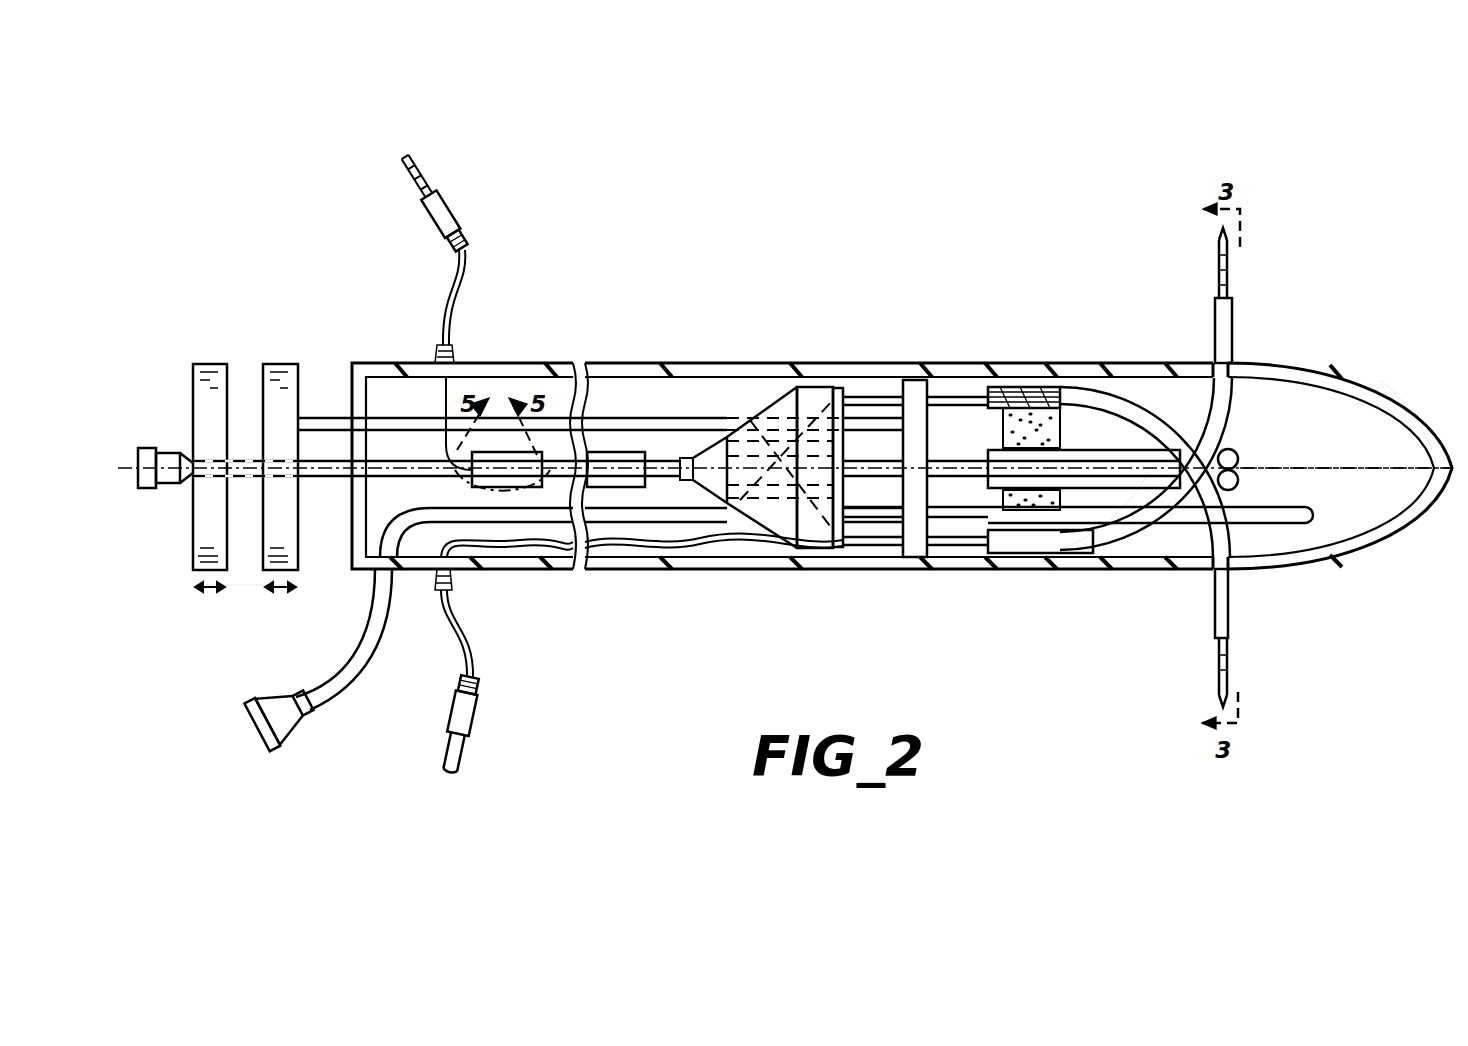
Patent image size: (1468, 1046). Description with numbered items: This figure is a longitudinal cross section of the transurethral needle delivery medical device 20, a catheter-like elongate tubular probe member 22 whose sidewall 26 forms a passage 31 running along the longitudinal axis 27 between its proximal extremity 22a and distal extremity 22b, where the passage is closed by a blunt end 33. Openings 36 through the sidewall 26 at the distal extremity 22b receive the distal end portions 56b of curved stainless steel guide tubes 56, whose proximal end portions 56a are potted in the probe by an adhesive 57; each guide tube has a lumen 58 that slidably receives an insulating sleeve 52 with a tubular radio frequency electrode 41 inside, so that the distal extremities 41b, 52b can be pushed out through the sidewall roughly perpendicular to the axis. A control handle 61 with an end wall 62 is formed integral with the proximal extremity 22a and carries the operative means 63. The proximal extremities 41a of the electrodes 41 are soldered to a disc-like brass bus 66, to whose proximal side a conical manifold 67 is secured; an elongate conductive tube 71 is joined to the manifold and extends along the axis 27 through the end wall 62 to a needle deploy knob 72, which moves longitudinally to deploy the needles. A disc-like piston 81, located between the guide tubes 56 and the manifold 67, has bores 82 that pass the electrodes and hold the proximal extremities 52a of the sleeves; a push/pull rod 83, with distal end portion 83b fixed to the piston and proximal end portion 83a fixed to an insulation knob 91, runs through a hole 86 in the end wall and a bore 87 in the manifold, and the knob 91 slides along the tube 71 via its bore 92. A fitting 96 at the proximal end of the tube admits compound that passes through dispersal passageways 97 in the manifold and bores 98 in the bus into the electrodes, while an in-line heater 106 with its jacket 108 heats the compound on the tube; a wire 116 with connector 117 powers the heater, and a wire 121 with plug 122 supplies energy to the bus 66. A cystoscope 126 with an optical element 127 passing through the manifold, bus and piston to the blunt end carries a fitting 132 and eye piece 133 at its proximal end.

The transurethral needle delivery medical device 20 is at (858, 236).
The elongate tubular probe member 22 is at (1000, 572).
The proximal extremity 22a is at (492, 570).
The distal extremity 22b is at (1350, 560).
The sidewall 26 is at (665, 460).
The longitudinal axis 27 is at (1345, 455).
The passage 31 is at (1150, 392).
The blunt end 33 is at (1395, 365).
The openings 36 is at (1212, 590).
The tubular radio frequency needles or electrodes 41 is at (1230, 272).
The proximal extremity of electrode 41a is at (858, 400).
The distal extremity of electrode 41b is at (1219, 270).
The insulating sleeve 52 is at (1234, 322).
The proximal extremity of insulating sleeve 52a is at (930, 378).
The distal extremity of insulating sleeve 52b is at (1215, 340).
The guide tubes 56 is at (1097, 570).
The proximal end portion of guide tube 56a is at (995, 387).
The distal end portion of guide tube 56b is at (1262, 368).
The adhesive 57 is at (1040, 553).
The guide passageway or lumen 58 is at (1040, 408).
The control handle 61 is at (480, 376).
The end wall 62 is at (352, 545).
The operative means 63 is at (228, 600).
The disc-like bus 66 is at (857, 570).
The conical manifold 67 is at (767, 570).
The elongate tube 71 is at (240, 462).
The needle deploy knob 72 is at (210, 364).
The bushing or piston 81 is at (912, 380).
The bores 82 is at (910, 560).
The push/pull rod 83 is at (572, 365).
The proximal end portion of push/pull rod 83a is at (327, 420).
The distal end portion of push/pull rod 83b is at (850, 378).
The hole 86 is at (383, 420).
The bore 87 is at (712, 380).
The insulation knob 91 is at (280, 364).
The bore 92 is at (305, 470).
The fitting 96 is at (165, 450).
The dispersal passageways 97 is at (757, 440).
The bores 98 is at (830, 570).
The in-line heater 106 is at (540, 487).
The sleeve or jacket 108 is at (648, 487).
The wire 116 is at (465, 280).
The connector 117 is at (430, 222).
The wire 121 is at (472, 630).
The plug 122 is at (478, 720).
The cystoscope 126 is at (381, 655).
The fiber or rod optical element 127 is at (962, 540).
The fitting 132 is at (298, 720).
The eye piece 133 is at (258, 720).